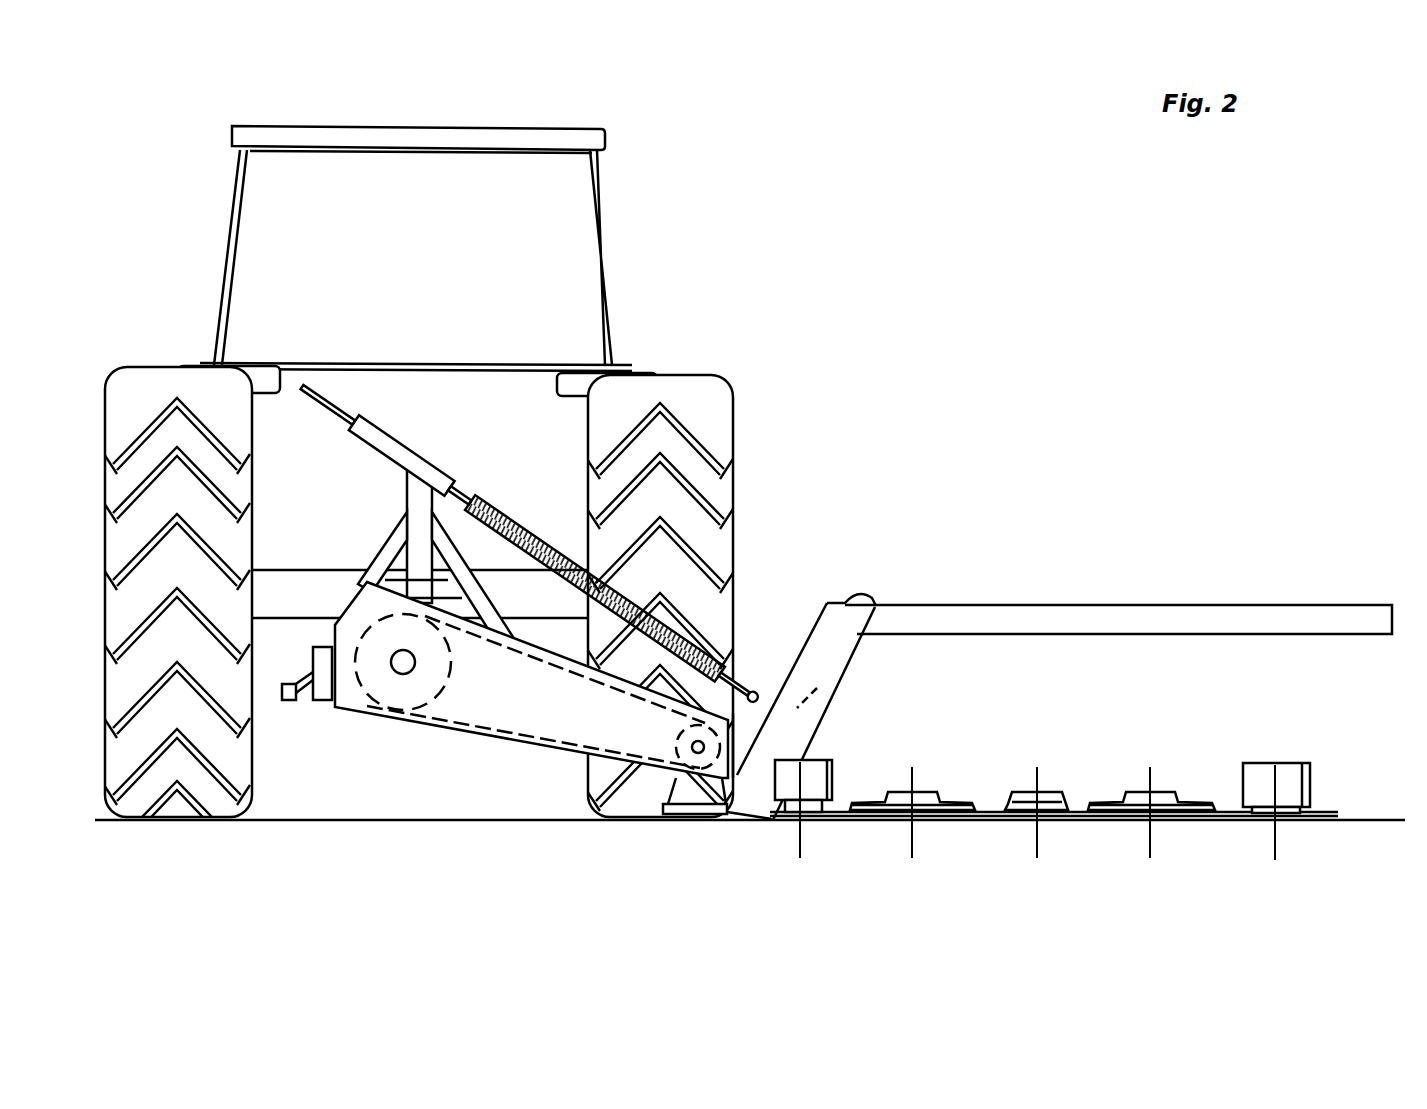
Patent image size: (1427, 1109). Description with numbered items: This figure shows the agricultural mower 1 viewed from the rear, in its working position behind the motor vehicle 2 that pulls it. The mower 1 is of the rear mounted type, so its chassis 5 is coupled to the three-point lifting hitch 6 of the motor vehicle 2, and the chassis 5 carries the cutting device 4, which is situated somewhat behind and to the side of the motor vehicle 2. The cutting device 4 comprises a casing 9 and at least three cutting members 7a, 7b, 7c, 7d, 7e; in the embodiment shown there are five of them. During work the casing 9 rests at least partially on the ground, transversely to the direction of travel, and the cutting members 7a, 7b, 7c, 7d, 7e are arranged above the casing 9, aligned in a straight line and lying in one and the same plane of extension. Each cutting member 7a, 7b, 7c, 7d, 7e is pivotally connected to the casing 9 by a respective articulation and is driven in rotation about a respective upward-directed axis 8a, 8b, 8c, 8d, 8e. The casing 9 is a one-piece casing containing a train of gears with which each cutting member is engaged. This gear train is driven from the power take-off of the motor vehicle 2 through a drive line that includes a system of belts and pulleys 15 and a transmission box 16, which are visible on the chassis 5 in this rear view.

The agricultural mower 1 is at (874, 448).
The motor vehicle 2 is at (223, 113).
The cutting device 4 is at (1220, 600).
The chassis 5 is at (382, 537).
The three-point lifting hitch 6 is at (300, 716).
The cutting member 7a is at (838, 752).
The cutting member 7b is at (947, 778).
The cutting member 7c is at (1064, 778).
The cutting member 7d is at (1175, 785).
The cutting member 7e is at (1308, 758).
The axis 8a is at (798, 843).
The axis 8b is at (910, 842).
The axis 8c is at (1035, 842).
The axis 8d is at (1148, 845).
The axis 8e is at (1273, 845).
The casing 9 is at (1338, 818).
The system of belts and pulleys 15 is at (537, 750).
The transmission box 16 is at (645, 790).